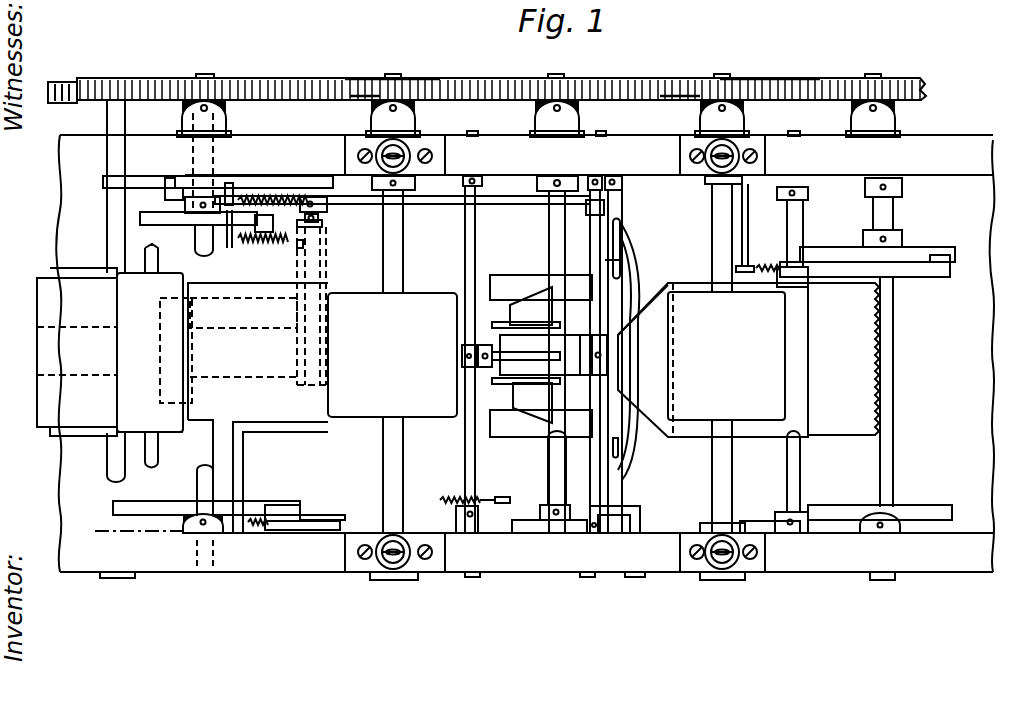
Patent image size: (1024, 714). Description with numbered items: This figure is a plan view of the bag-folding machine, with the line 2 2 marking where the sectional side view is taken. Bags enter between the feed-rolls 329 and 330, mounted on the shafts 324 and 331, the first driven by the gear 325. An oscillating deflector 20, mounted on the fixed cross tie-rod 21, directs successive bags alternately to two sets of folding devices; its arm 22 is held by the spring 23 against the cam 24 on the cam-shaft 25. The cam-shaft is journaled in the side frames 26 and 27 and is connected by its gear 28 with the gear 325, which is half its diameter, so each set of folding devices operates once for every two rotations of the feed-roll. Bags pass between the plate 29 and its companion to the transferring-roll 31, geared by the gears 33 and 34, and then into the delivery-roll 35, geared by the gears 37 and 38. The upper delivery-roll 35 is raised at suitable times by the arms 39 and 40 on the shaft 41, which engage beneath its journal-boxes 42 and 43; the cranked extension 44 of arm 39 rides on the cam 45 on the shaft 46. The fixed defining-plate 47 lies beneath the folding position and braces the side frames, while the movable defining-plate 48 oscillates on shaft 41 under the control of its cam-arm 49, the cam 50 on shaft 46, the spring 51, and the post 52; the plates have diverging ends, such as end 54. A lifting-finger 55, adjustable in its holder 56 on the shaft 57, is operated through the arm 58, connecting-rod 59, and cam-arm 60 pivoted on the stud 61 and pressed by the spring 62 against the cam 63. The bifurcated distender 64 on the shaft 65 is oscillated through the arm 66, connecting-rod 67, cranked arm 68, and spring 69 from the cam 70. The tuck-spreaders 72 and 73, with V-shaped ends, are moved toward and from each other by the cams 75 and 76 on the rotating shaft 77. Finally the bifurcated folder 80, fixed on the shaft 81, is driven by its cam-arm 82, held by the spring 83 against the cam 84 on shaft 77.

The section line 2 is at (129, 531).
The oscillating deflector 20 is at (165, 348).
The fixed cross tie-rod 21 is at (310, 443).
The arm 22 is at (300, 245).
The spring 23 is at (258, 244).
The cam 24 is at (183, 225).
The cam-shaft 25 is at (206, 254).
The side frame 26 is at (254, 549).
The side frame 27 is at (298, 183).
The gear 28 is at (252, 80).
The plate 29 is at (258, 391).
The transferring-roll 31 is at (392, 355).
The gear 33 is at (358, 98).
The gear 34 is at (370, 81).
The upper delivery-roll 35 is at (726, 356).
The gear 37 is at (697, 99).
The gear 38 is at (745, 73).
The arm 39 is at (752, 521).
The arm 40 is at (802, 194).
The shaft 41 is at (803, 238).
The journal-box 42 is at (702, 526).
The journal-box 43 is at (712, 188).
The cranked extension 44 is at (803, 512).
The cam 45 is at (914, 510).
The shaft 46 is at (883, 462).
The fixed defining-plate 47 is at (692, 455).
The movable defining-plate 48 is at (713, 360).
The cam-arm 49 is at (923, 275).
The cam 50 is at (928, 250).
The spring 51 is at (768, 265).
The post 52 is at (745, 240).
The diverging end of defining-plate 54 is at (643, 315).
The lifting-finger 55 is at (520, 360).
The holder 56 is at (462, 360).
The shaft 57 is at (465, 247).
The arm 58 is at (448, 509).
The connecting-rod 59 is at (355, 528).
The cam-arm 60 is at (300, 508).
The stud 61 is at (336, 498).
The spring 62 is at (257, 519).
The cam 63 is at (287, 505).
The distender 64 is at (500, 340).
The shaft 65 is at (605, 261).
The arm 66 is at (590, 210).
The connecting-rod 67 is at (533, 215).
The cranked arm 68 is at (325, 198).
The spring 69 is at (265, 198).
The cam 70 is at (156, 176).
The tuck-spreader 72 is at (618, 459).
The tuck-spreader 73 is at (612, 246).
The cam 75 is at (541, 423).
The cam 76 is at (541, 287).
The rotating shaft 77 is at (548, 452).
The folder 80 is at (505, 295).
The shaft 81 is at (600, 422).
The cam-arm 82 is at (630, 522).
The spring 83 is at (496, 499).
The cam 84 is at (536, 530).
The shaft 324 is at (107, 242).
The gear 325 is at (66, 82).
The feed-roll 329 is at (52, 432).
The feed-roll 330 is at (150, 416).
The shaft 331 is at (155, 450).